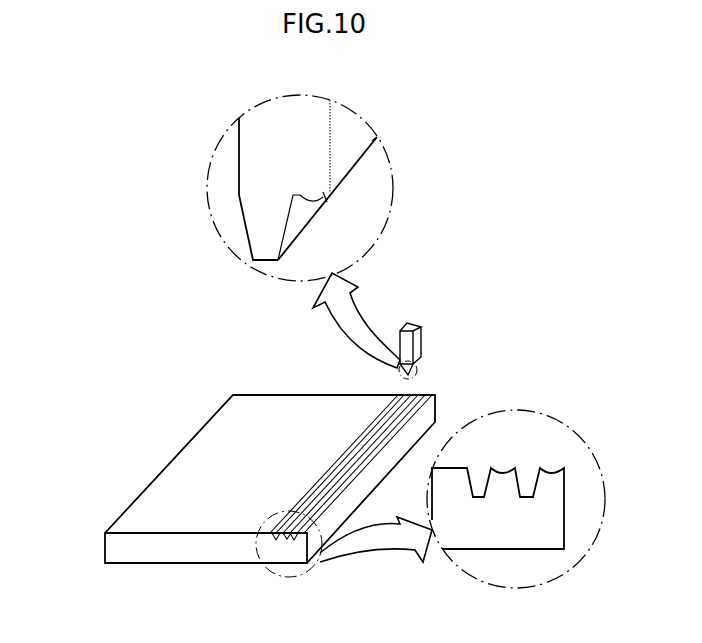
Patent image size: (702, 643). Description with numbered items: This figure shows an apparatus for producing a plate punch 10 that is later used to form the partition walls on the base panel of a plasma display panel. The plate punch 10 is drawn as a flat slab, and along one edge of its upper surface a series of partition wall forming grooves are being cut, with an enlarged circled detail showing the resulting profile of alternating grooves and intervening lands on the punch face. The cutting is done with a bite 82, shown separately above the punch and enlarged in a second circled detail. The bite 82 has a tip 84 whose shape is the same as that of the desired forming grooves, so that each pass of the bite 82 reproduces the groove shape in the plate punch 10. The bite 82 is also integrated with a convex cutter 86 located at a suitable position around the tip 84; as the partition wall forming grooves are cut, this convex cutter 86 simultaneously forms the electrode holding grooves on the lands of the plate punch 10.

The plate punch 10 is at (200, 462).
The bite 82 is at (239, 175).
The tip 84 is at (264, 233).
The convex cutter 86 is at (325, 197).